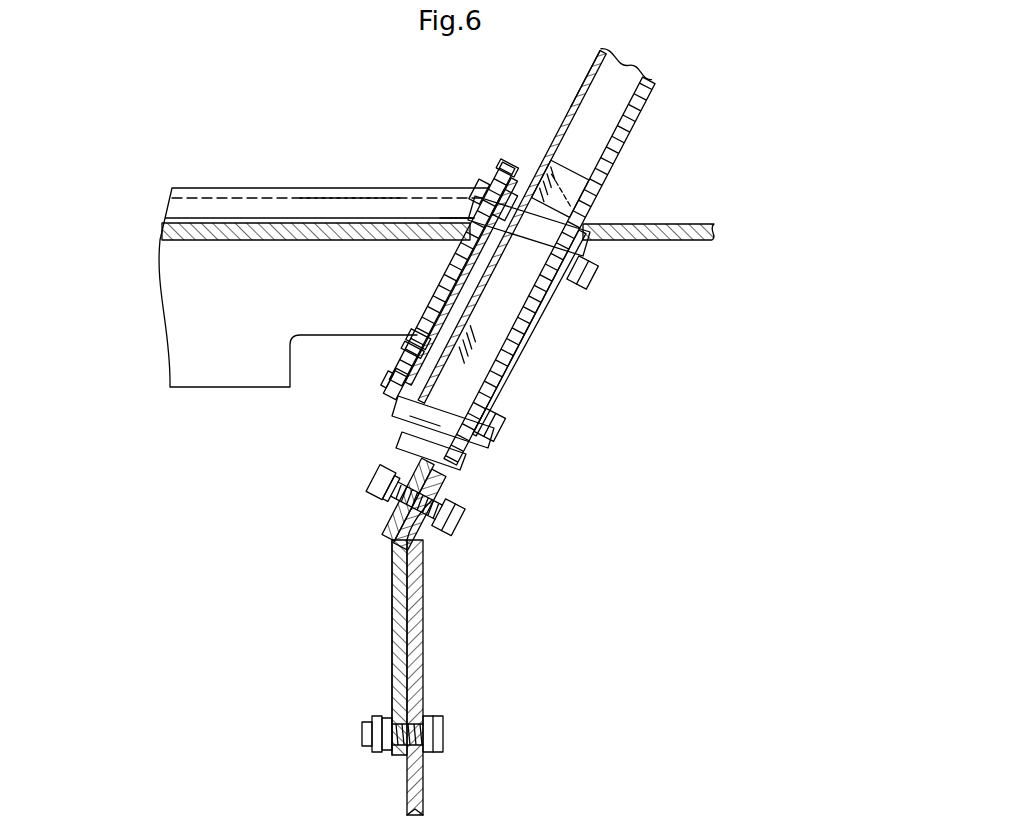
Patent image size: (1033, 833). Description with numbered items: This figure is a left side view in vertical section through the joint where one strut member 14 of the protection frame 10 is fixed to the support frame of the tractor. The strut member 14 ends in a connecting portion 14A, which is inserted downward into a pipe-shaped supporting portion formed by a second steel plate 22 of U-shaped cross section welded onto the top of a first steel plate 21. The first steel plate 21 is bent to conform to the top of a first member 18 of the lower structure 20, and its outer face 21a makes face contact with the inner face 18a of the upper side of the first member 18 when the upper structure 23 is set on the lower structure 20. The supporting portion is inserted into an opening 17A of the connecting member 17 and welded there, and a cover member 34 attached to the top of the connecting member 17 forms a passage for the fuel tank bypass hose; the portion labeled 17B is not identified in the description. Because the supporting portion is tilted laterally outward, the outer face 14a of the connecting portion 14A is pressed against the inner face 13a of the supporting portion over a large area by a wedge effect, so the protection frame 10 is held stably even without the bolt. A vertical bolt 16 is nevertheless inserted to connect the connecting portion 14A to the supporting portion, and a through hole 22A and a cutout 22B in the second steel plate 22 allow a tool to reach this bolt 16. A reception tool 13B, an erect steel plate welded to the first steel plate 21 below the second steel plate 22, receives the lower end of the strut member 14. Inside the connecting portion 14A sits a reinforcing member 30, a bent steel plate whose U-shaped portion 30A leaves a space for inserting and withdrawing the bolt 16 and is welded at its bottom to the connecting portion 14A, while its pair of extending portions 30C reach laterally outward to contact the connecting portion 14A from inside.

The protection frame 10 is at (578, 103).
The reception tool 13B is at (412, 438).
The inner face 13a is at (565, 213).
The strut member 14 is at (655, 106).
The connecting portion 14A is at (462, 268).
The outer face 14a is at (560, 320).
The bolt 16 is at (486, 198).
The connecting member 17 is at (200, 215).
The opening 17A is at (462, 205).
The frame flange 17B is at (708, 223).
The first member 18 is at (425, 666).
The inner face 18a is at (393, 586).
The lower structure 20 is at (432, 784).
The first steel plate 21 is at (400, 520).
The outer face 21a is at (428, 566).
The second steel plate 22 is at (440, 303).
The through hole 22A is at (490, 180).
The cutout 22B is at (400, 350).
The upper structure 23 is at (275, 185).
The reinforcing member 30 is at (570, 163).
The U-shaped portion 30A is at (420, 416).
The extending portion 30C is at (590, 172).
The cover member 34 is at (345, 196).